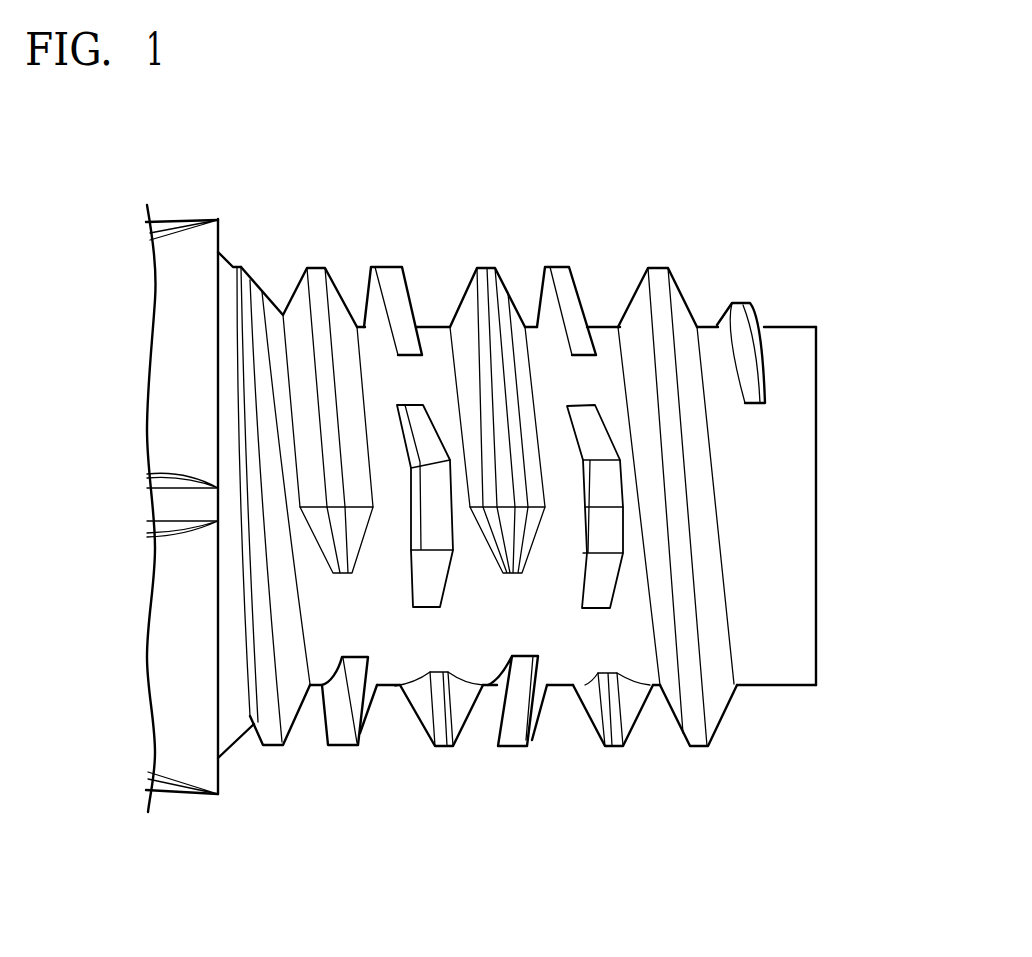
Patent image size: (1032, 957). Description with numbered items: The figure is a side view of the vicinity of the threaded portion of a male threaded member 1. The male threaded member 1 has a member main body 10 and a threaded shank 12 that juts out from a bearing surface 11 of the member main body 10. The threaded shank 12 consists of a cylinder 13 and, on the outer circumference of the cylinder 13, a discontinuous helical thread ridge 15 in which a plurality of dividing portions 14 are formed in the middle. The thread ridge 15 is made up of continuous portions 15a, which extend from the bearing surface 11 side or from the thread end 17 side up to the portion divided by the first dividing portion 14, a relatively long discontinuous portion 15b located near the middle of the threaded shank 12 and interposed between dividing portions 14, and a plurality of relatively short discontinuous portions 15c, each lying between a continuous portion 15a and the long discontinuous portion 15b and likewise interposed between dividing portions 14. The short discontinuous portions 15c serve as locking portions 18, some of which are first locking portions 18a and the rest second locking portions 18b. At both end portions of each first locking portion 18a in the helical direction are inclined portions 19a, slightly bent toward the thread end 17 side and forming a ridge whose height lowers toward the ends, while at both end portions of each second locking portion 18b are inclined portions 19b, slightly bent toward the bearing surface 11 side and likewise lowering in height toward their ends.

The male threaded member 1 is at (776, 162).
The member main body 10 is at (173, 790).
The bearing surface 11 is at (222, 776).
The threaded shank 12 is at (787, 857).
The cylinder 13 is at (777, 690).
The dividing portion 14 is at (403, 388).
The thread ridge 15 is at (697, 752).
The continuous portion 15a is at (295, 297).
The long discontinuous portion 15b is at (487, 265).
The short discontinuous portion 15c is at (560, 266).
The thread end 17 is at (817, 633).
The locking portion 18 is at (485, 110).
The first locking portion 18a is at (383, 263).
The second locking portion 18b is at (440, 480).
The inclined portion 19a is at (400, 310).
The inclined portion 19b is at (420, 433).